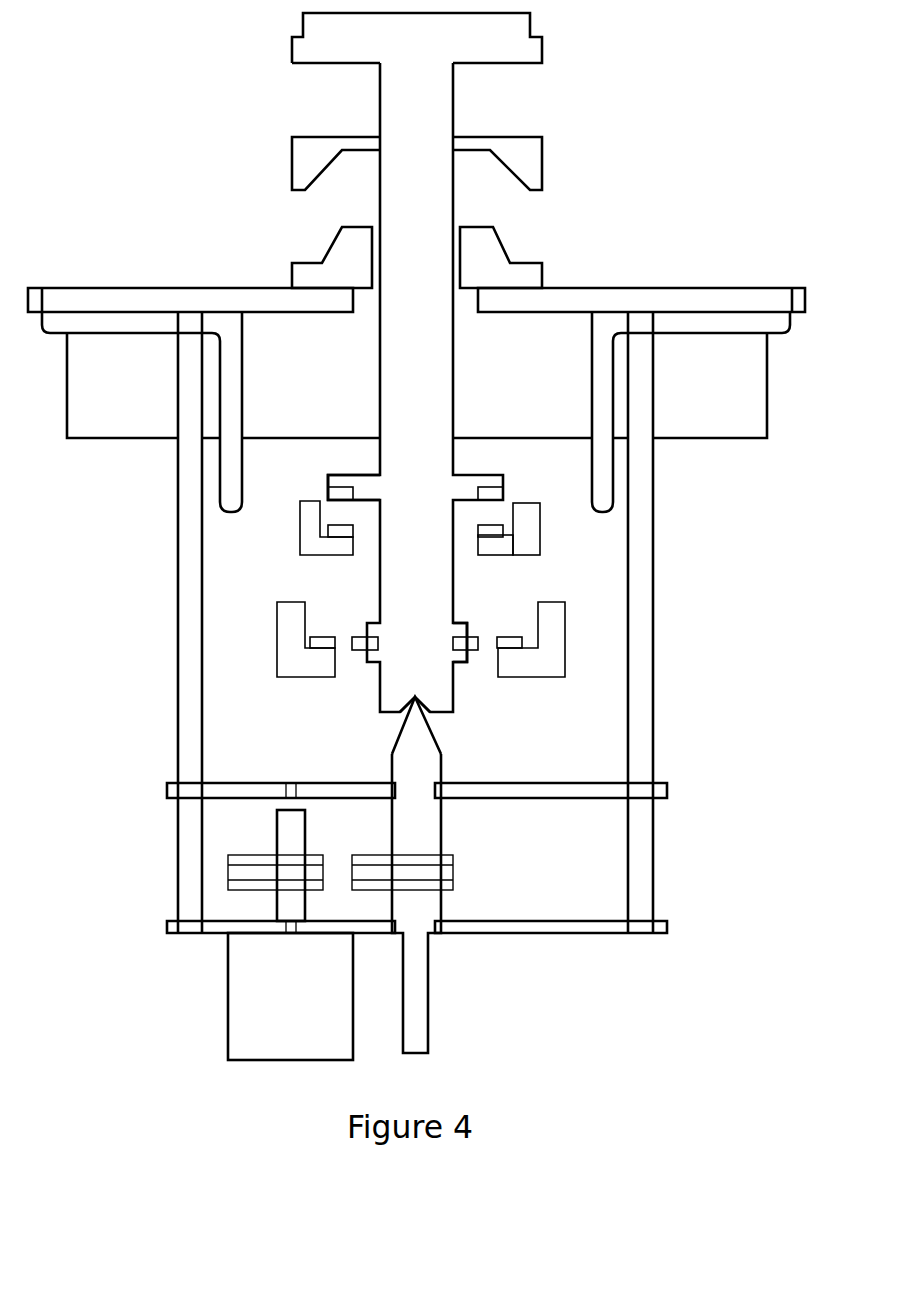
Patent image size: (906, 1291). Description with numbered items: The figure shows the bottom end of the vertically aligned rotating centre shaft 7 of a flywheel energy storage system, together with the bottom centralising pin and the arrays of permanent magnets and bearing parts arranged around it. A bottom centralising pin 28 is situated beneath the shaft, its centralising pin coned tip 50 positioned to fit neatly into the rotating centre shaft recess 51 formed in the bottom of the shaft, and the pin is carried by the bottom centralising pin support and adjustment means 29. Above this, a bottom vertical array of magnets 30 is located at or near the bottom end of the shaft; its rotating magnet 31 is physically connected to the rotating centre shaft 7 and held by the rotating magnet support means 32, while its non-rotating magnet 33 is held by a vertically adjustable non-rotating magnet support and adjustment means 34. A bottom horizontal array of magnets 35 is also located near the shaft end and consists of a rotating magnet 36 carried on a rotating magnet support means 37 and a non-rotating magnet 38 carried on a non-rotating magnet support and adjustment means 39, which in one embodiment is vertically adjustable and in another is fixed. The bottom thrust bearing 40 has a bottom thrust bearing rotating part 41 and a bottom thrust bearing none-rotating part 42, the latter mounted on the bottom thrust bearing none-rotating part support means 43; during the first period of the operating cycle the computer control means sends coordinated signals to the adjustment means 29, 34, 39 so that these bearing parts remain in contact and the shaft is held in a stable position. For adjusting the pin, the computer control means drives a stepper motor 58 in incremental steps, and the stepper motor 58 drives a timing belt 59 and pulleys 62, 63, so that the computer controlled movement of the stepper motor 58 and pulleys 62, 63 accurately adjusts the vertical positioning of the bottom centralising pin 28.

The rotating centre shaft 7 is at (407, 93).
The bottom centralising pin 28 is at (425, 825).
The bottom centralising pin support and adjustment means 29 is at (640, 747).
The bottom vertical array of magnets 30 is at (490, 532).
The rotating magnet 31 is at (343, 493).
The rotating magnet support means 32 is at (343, 477).
The non-rotating magnet 33 is at (490, 533).
The non-rotating magnet support and adjustment means 34 is at (537, 533).
The bottom horizontal array of magnets 35 is at (360, 642).
The rotating magnet 36 is at (473, 642).
The rotating magnet support means 37 is at (460, 657).
The non-rotating magnet 38 is at (315, 645).
The non-rotating magnet support and adjustment means 39 is at (550, 664).
The bottom thrust bearing 40 is at (350, 262).
The bottom thrust bearing rotating part 41 is at (527, 155).
The bottom thrust bearing none-rotating part 42 is at (490, 267).
The bottom thrust bearing none-rotating part support means 43 is at (600, 298).
The centralising pin coned tip 50 is at (437, 740).
The rotating centre shaft recess 51 is at (412, 698).
The stepper motor 58 is at (253, 1008).
The timing belt 59 is at (337, 873).
The pulley 3 62 is at (452, 892).
The pulley 4 63 is at (250, 882).